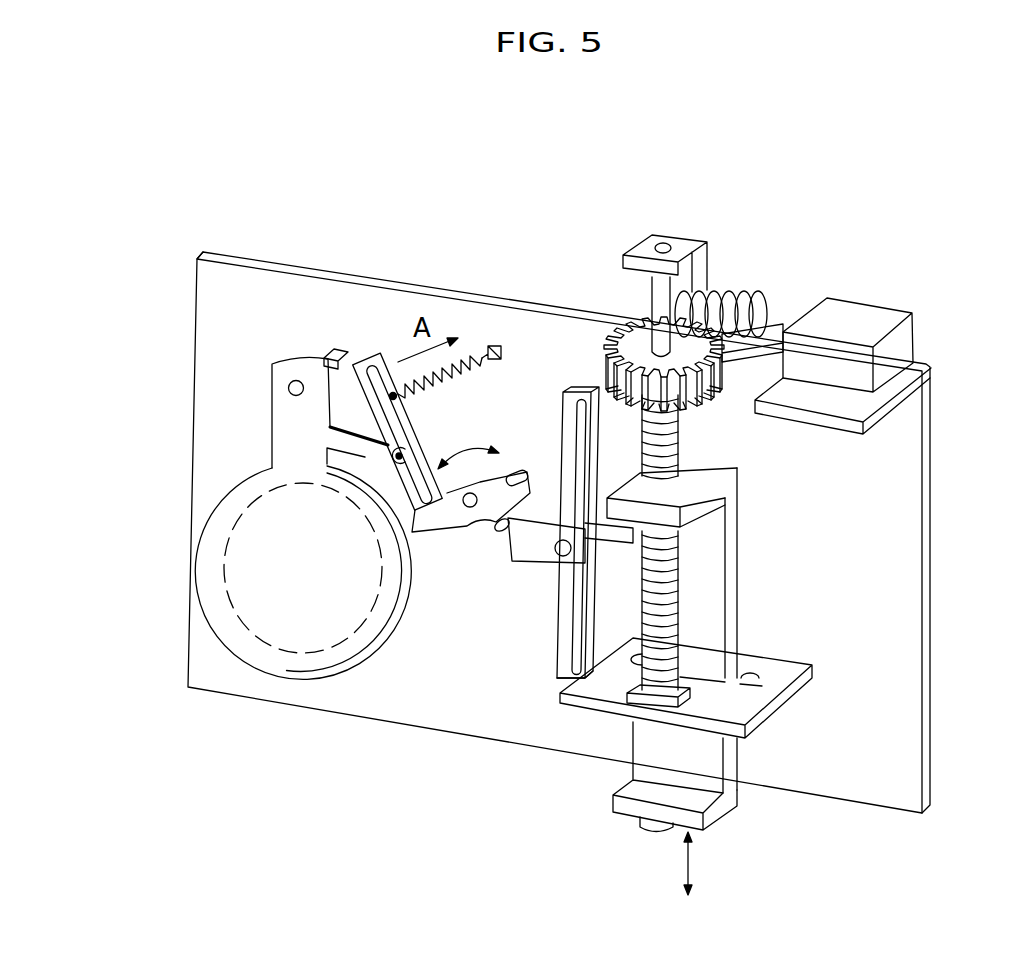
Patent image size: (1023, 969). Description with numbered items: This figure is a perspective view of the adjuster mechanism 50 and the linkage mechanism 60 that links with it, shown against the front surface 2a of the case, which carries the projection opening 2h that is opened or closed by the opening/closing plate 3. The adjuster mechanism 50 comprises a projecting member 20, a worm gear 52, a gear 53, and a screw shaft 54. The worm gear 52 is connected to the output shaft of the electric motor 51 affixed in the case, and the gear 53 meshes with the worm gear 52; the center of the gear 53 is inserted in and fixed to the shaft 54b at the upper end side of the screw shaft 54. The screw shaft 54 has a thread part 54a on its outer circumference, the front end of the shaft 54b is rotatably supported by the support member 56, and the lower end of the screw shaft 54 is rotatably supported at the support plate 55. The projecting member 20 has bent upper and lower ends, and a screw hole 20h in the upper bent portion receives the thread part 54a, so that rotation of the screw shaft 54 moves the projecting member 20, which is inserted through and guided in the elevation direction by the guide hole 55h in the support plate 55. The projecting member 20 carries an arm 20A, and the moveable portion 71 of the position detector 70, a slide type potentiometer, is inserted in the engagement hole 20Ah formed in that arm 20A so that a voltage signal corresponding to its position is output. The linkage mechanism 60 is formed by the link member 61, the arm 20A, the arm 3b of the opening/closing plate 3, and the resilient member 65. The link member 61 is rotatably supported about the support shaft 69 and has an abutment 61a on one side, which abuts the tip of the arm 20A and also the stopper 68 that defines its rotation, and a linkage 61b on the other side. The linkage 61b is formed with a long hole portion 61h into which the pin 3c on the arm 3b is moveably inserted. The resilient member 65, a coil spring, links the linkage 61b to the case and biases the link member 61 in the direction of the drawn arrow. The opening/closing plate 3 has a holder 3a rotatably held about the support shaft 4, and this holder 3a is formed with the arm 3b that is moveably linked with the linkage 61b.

The front surface 2a is at (930, 503).
The projection opening 2h is at (287, 652).
The opening/closing plate 3 is at (294, 435).
The holder 3a is at (294, 329).
The arm 3b is at (333, 349).
The pin 3c is at (380, 443).
The support shaft 4 is at (296, 380).
The projecting member 20 is at (710, 649).
The arm 20A is at (593, 581).
The engagement hole 20Ah is at (600, 640).
The screw hole 20h is at (730, 487).
The adjuster mechanism 50 is at (752, 286).
The electric motor 51 is at (858, 312).
The worm gear 52 is at (742, 296).
The gear 53 is at (700, 368).
The screw shaft 54 is at (766, 531).
The thread part 54a is at (680, 593).
The shaft 54b is at (770, 298).
The support plate 55 is at (708, 753).
The guide hole 55h is at (760, 690).
The support member 56 is at (683, 250).
The linkage mechanism 60 is at (474, 626).
The link member 61 is at (421, 513).
The abutment 61a is at (513, 474).
The linkage 61b is at (372, 372).
The long hole portion 61h is at (393, 392).
The resilient member 65 is at (457, 363).
The stopper 68 is at (524, 694).
The support shaft 69 is at (478, 487).
The position detector 70 is at (577, 391).
The moveable portion 71 is at (560, 556).